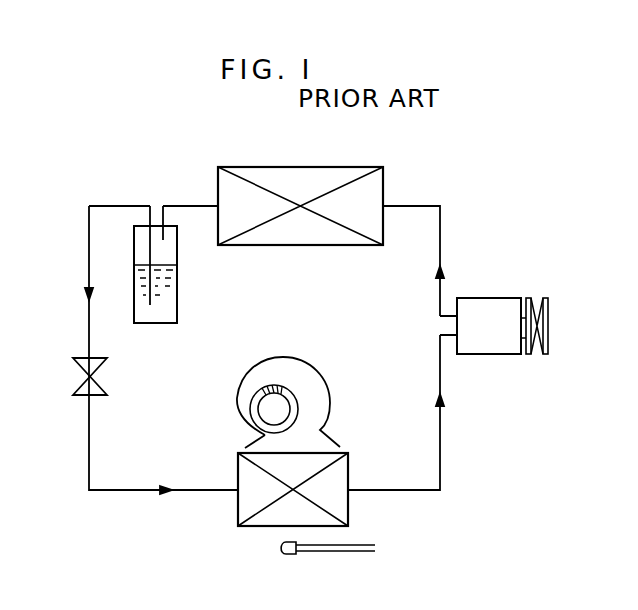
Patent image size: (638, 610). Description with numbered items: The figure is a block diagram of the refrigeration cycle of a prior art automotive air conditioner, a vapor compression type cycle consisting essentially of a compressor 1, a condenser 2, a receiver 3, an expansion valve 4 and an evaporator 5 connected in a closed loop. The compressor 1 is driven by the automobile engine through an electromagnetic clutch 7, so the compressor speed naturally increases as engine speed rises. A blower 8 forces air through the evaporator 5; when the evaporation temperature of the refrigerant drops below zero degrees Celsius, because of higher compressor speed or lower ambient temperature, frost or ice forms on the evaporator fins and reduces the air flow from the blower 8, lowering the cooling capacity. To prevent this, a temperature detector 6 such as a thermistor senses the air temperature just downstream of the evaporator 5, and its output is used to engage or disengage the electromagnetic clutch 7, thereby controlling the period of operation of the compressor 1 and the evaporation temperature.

The compressor 1 is at (470, 354).
The condenser 2 is at (325, 167).
The receiver 3 is at (177, 282).
The expansion valve 4 is at (73, 360).
The evaporator 5 is at (238, 513).
The temperature detector 6 is at (288, 555).
The electromagnetic clutch 7 is at (529, 354).
The blower 8 is at (330, 402).